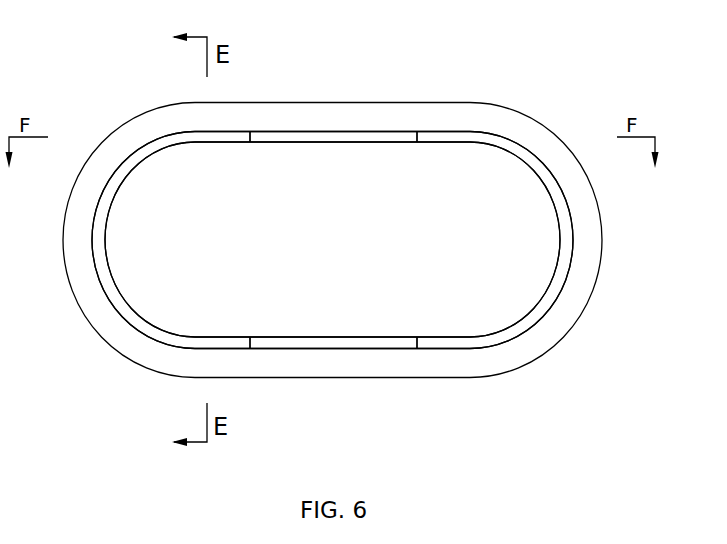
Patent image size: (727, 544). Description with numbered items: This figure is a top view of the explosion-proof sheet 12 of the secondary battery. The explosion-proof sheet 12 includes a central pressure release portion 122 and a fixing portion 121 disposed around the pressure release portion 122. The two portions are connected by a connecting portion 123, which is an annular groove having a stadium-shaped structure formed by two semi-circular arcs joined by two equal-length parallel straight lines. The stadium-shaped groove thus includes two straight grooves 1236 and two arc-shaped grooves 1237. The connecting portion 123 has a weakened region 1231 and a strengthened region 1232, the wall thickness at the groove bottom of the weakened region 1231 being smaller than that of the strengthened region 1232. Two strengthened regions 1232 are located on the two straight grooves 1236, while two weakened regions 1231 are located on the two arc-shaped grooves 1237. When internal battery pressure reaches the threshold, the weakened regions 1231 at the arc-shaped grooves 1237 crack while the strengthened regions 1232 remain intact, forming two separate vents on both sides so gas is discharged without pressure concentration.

The explosion-proof sheet 12 is at (128, 112).
The fixing portion 121 is at (195, 118).
The pressure release portion 122 is at (316, 223).
The connecting portion 123 is at (427, 62).
The weakened region 1231 is at (460, 133).
The strengthened region 1232 is at (382, 133).
The straight groove 1236 is at (438, 340).
The arc-shaped groove 1237 is at (130, 313).